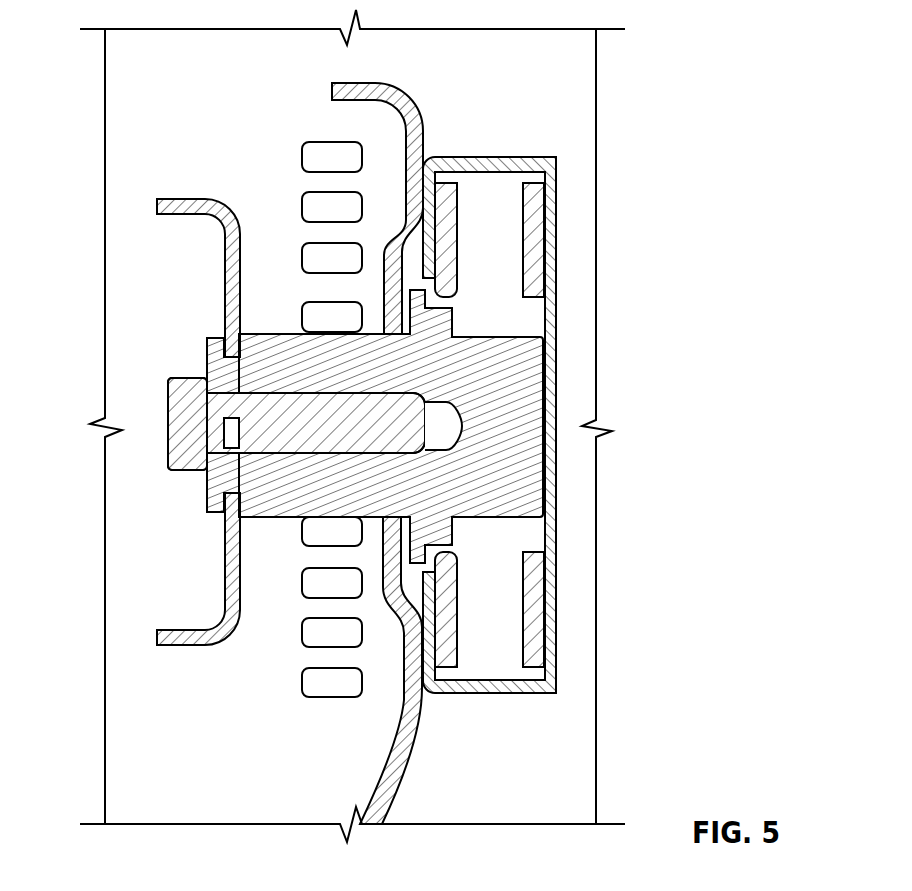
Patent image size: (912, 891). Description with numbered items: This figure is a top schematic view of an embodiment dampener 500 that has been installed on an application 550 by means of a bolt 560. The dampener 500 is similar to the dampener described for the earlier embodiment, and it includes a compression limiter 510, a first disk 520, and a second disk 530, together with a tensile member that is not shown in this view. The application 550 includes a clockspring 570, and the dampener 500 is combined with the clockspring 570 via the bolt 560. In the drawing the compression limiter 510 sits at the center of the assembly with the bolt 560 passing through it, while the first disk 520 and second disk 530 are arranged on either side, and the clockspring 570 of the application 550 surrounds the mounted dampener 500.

The dampener 500 is at (526, 136).
The compression limiter 510 is at (538, 386).
The first disk 520 is at (446, 182).
The second disk 530 is at (540, 232).
The application 550 is at (377, 68).
The bolt 560 is at (165, 400).
The clockspring 570 is at (300, 120).